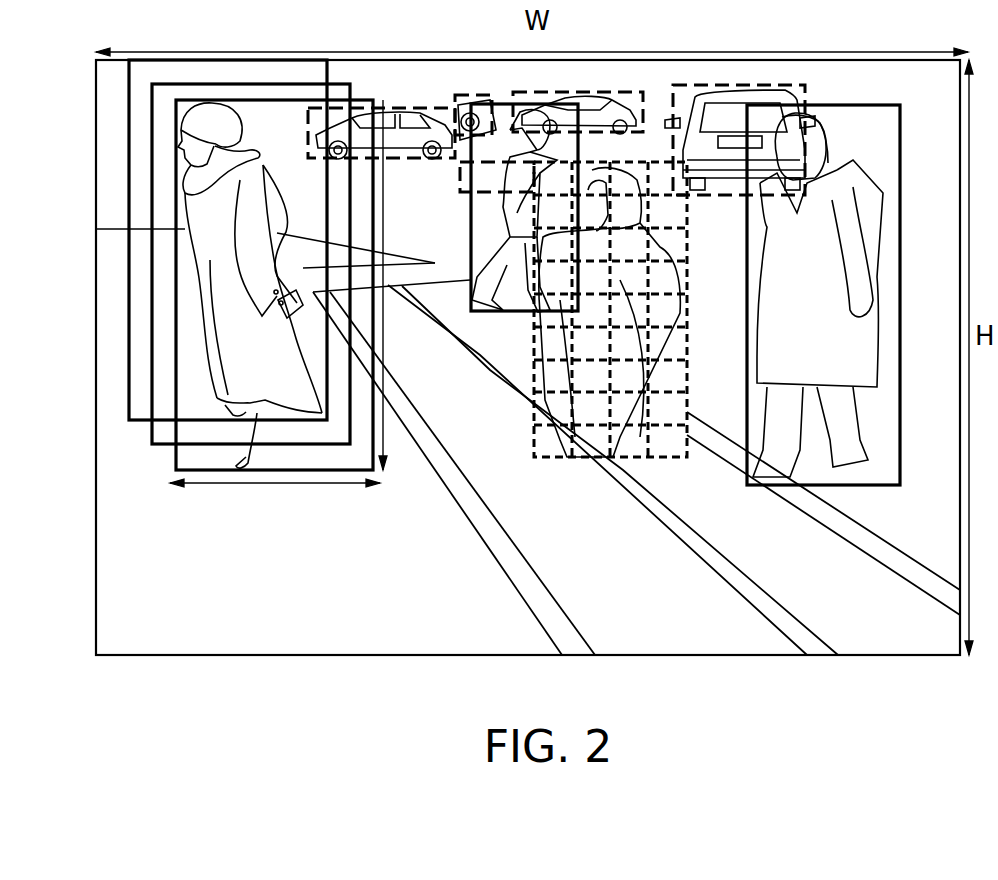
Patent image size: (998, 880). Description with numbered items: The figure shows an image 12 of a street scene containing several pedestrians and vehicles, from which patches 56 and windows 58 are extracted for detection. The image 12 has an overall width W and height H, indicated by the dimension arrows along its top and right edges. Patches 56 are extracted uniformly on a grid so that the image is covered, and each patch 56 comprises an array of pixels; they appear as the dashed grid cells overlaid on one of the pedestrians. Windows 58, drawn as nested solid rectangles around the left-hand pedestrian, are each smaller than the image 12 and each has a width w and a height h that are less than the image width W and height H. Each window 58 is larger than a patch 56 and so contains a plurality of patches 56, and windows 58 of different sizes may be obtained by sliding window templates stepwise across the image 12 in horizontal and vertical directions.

The image 12 is at (571, 634).
The patch 56 is at (553, 450).
The window 58 is at (141, 402).